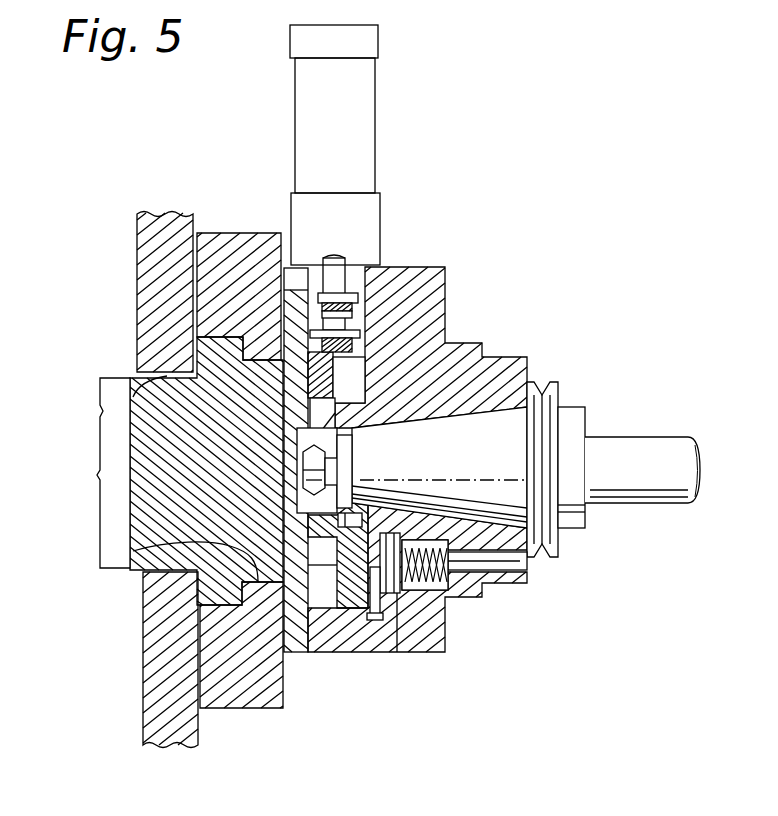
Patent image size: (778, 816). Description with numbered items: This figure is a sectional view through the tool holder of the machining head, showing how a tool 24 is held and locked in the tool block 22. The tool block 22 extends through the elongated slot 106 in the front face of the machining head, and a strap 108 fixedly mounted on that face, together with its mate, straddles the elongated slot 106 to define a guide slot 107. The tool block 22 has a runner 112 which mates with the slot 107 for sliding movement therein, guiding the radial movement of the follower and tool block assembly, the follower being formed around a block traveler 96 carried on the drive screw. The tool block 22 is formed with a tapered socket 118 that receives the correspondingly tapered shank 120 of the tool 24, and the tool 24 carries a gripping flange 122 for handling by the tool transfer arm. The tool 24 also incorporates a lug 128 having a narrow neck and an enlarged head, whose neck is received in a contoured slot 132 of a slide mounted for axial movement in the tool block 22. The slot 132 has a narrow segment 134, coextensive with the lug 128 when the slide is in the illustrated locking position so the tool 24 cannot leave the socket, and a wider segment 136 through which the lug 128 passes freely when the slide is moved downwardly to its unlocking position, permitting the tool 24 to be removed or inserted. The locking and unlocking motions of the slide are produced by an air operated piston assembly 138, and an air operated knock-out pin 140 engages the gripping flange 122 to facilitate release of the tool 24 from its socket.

The tool block 22 is at (455, 333).
The tool 24 is at (590, 518).
The block traveler 96 is at (118, 557).
The elongated slot 106 is at (100, 398).
The slot 107 is at (133, 551).
The strap 108 is at (237, 243).
The runner 112 is at (208, 505).
The tapered socket 118 is at (350, 427).
The tapered shank 120 is at (490, 478).
The gripping flange 122 is at (557, 383).
The lug 128 is at (308, 467).
The contoured slot 132 is at (347, 428).
The narrow segment 134 is at (310, 438).
The wider segment 136 is at (320, 408).
The air operated piston assembly 138 is at (354, 113).
The knock-out pin 140 is at (397, 593).